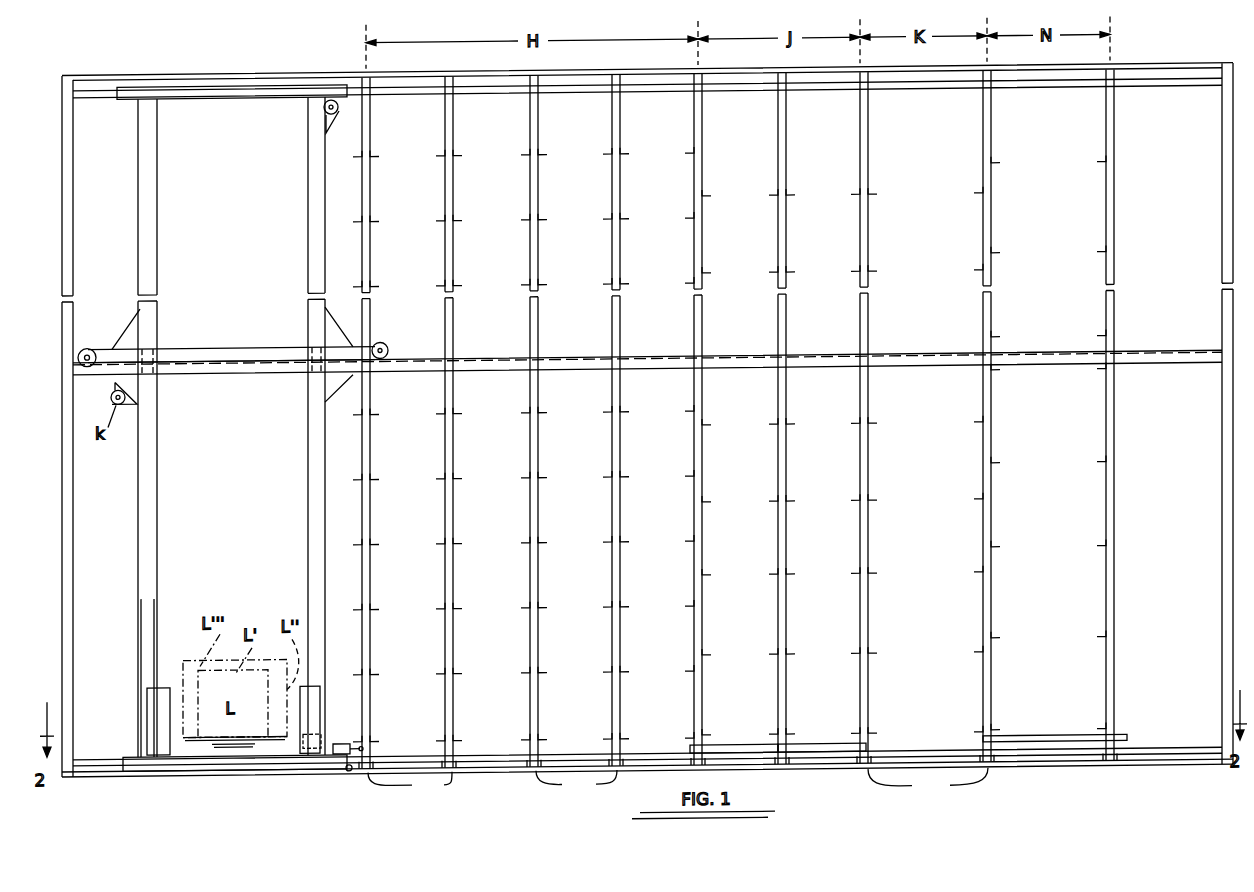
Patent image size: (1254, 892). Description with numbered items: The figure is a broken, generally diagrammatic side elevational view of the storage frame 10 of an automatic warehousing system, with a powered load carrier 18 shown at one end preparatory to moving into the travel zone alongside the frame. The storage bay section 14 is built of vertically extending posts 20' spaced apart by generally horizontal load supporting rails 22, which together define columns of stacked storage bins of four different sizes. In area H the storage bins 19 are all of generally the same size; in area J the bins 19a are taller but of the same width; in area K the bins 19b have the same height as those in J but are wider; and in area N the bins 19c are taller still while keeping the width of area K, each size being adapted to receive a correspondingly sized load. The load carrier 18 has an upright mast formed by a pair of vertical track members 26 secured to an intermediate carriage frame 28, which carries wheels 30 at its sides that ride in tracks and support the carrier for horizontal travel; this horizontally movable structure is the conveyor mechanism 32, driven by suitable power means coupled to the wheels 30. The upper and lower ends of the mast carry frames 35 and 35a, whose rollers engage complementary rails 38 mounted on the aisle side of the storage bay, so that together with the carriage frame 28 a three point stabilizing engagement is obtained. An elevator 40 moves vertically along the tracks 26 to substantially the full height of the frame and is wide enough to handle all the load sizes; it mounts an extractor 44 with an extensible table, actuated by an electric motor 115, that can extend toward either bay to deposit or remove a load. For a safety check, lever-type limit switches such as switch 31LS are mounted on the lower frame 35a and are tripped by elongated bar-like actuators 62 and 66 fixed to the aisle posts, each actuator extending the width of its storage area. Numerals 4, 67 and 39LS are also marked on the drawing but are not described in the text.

The storage frame 10 is at (1082, 778).
The storage bay section 14 is at (1192, 74).
The load carrier 18 is at (137, 547).
The storage bin 19 is at (512, 421).
The storage bin 19a is at (768, 418).
The storage bin 19b is at (899, 417).
The storage bin 19c is at (1048, 415).
The vertically extending post 20' is at (678, 785).
The load supporting rail 22 is at (436, 227).
The track member 26 is at (138, 210).
The carriage frame 28 is at (228, 350).
The wheel 30 is at (88, 349).
The conveyor mechanism 32 is at (141, 678).
The upper frame 35 is at (230, 101).
The lower frame 35a is at (163, 773).
The rail 38 is at (99, 91).
The pulley 4 is at (322, 114).
The elevator 40 is at (163, 689).
The extractor 44 is at (265, 750).
The actuator 62 is at (745, 752).
The bar 67 is at (830, 752).
The actuator 66 is at (1066, 746).
The electric motor 115 is at (317, 752).
The limit switch 31LS is at (342, 746).
The limit switch 39LS is at (349, 775).